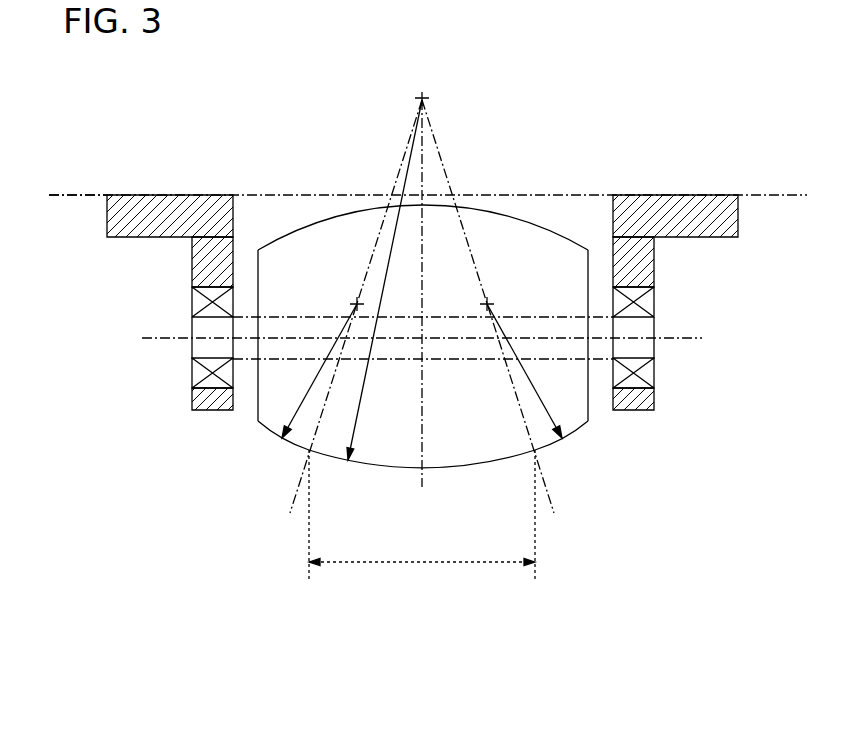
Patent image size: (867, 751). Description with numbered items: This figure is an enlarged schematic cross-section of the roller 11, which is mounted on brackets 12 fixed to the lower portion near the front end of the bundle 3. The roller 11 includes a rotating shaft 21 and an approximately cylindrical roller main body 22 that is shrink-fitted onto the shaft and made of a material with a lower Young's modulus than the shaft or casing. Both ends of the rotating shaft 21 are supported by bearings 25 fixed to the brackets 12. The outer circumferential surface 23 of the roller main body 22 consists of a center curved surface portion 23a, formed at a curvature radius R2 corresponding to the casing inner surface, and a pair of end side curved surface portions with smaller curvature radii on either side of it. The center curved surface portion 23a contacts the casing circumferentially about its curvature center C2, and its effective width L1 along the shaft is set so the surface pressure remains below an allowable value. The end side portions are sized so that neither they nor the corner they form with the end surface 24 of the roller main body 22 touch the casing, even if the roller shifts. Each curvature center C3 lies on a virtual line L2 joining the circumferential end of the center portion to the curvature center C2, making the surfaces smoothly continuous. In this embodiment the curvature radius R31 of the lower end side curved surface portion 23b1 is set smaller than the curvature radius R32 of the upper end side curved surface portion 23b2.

The bundle 3 is at (71, 197).
The roller 11 is at (249, 137).
The brackets 12 is at (145, 217).
The rotating shaft 21 is at (197, 347).
The roller main body 22 is at (552, 240).
The outer circumferential surface 23 is at (286, 237).
The center curved surface portion 23a is at (458, 470).
The one end side curved surface portion 23b1 is at (556, 446).
The other end side curved surface portion 23b2 is at (292, 446).
The end surface 24 is at (257, 277).
The bearings 25 is at (197, 302).
The curvature center C2 is at (425, 95).
The curvature center C3 is at (355, 302).
The effective width L1 is at (422, 563).
The virtual line L2 is at (406, 150).
The curvature radius R2 is at (361, 397).
The curvature radius R31 is at (560, 425).
The curvature radius R32 is at (281, 425).